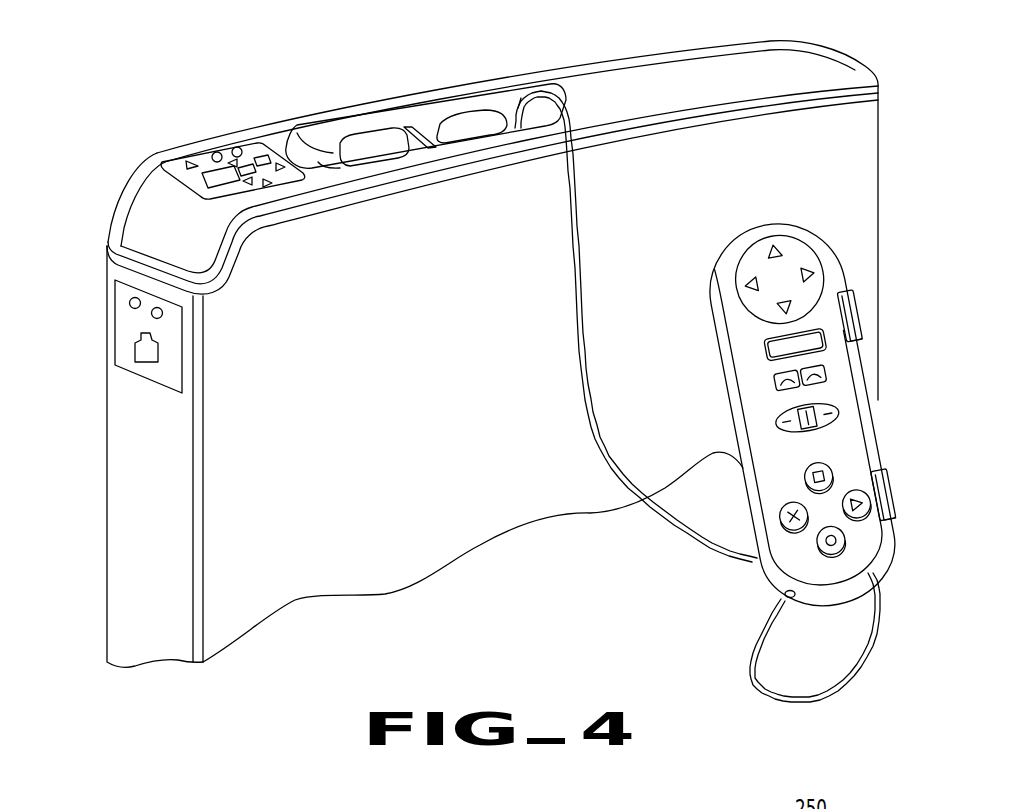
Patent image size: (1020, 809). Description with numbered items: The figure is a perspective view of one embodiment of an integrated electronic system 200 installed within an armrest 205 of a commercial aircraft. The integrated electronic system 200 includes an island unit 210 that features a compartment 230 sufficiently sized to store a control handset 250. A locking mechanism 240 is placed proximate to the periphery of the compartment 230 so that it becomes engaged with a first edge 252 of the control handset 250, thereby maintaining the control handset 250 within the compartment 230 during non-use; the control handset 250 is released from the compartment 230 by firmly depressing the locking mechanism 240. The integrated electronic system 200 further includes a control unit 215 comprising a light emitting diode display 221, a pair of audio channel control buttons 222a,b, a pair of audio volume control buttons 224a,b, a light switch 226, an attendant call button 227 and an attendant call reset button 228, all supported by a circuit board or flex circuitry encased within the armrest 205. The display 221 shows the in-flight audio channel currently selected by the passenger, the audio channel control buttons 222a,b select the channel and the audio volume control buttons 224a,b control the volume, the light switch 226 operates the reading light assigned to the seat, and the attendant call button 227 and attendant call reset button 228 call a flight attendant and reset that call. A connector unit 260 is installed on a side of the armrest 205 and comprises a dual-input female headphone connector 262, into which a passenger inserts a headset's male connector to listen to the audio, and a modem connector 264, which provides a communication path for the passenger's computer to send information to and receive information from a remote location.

The integrated electronic system 200 is at (463, 338).
The armrest 205 is at (813, 63).
The island unit 210 is at (387, 94).
The control unit 215 is at (219, 160).
The light emitting diode (LED) display 221 is at (220, 184).
The audio channel control buttons 222a,b is at (263, 181).
The audio volume control buttons 224a,b is at (286, 174).
The light switch 226 is at (236, 149).
The attendant call button 227 is at (214, 155).
The attendant call reset button 228 is at (192, 177).
The compartment 230 is at (350, 124).
The locking mechanism 240 is at (428, 134).
The control handset 250 is at (775, 451).
The first edge 252 is at (706, 386).
The connector unit 260 is at (112, 321).
The headphone connector 262 is at (129, 305).
The modem connector 264 is at (135, 348).